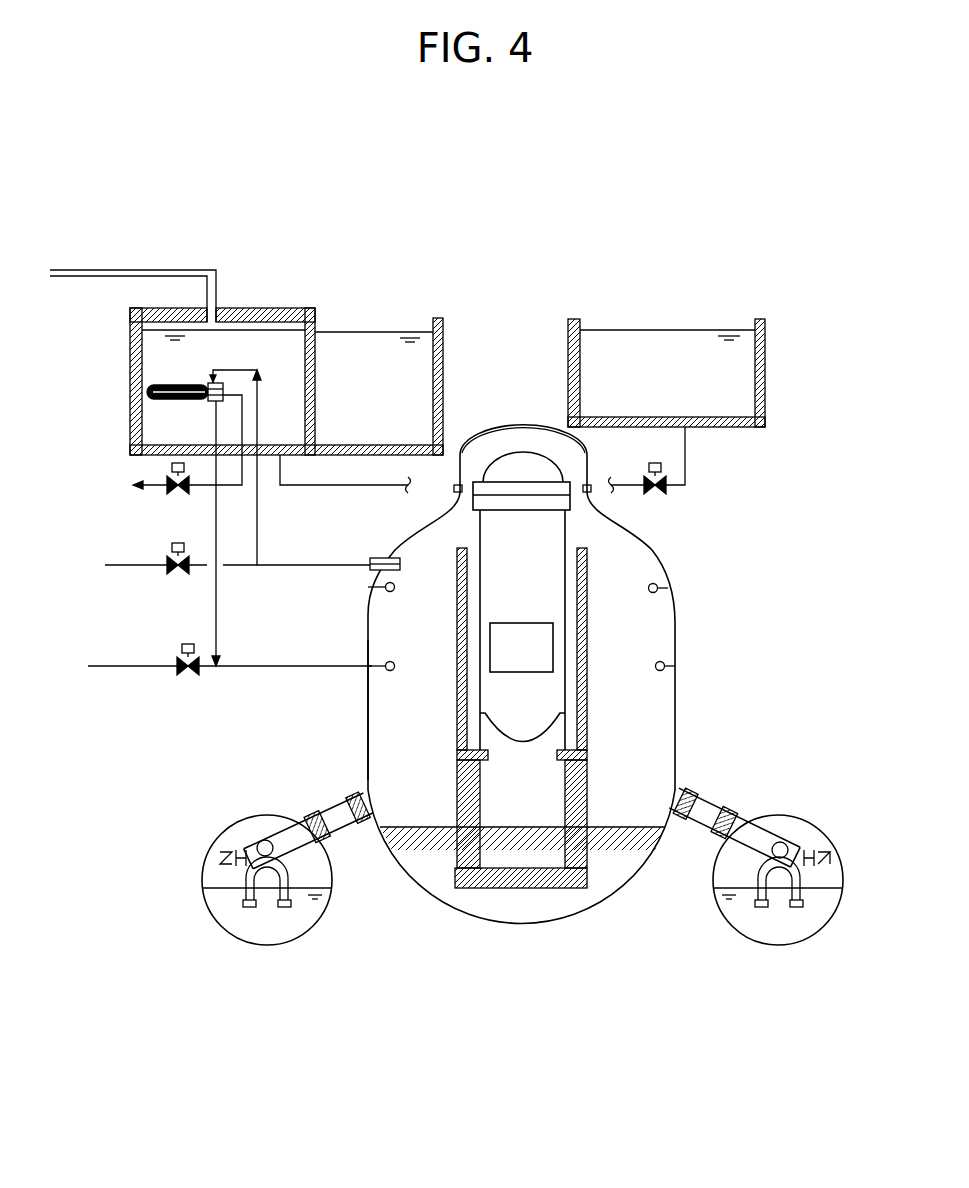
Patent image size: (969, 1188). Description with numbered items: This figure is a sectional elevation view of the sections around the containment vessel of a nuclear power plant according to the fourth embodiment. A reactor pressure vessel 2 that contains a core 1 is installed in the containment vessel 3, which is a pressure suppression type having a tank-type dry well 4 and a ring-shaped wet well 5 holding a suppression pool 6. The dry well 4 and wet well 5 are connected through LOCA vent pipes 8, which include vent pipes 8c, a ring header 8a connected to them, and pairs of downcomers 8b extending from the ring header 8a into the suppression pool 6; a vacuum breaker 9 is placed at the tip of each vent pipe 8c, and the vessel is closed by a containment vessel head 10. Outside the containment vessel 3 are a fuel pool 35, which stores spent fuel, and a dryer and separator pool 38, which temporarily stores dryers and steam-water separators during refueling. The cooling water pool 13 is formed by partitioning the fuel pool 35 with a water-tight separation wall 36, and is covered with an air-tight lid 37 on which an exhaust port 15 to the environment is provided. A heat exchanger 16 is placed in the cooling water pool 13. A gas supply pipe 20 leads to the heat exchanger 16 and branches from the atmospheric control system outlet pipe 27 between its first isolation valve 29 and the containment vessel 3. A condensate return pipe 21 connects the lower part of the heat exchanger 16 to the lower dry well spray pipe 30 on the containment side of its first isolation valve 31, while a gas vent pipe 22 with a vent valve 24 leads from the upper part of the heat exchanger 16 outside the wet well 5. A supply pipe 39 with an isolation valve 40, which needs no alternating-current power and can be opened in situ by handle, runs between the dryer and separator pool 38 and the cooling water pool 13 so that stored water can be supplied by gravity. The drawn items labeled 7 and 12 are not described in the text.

The core 1 is at (553, 647).
The reactor pressure vessel 2 is at (567, 535).
The containment vessel 3 is at (681, 598).
The dry well 4 is at (368, 735).
The wet well 5 is at (203, 838).
The suppression pool 6 is at (222, 903).
The vent pipe 7 is at (210, 877).
The LOCA vent pipes 8 is at (350, 856).
The ring header 8a is at (763, 843).
The downcomers 8b is at (288, 877).
The vent pipes 8c is at (757, 870).
The vacuum breaker 9 is at (820, 870).
The containment vessel head 10 is at (505, 425).
The water supply system 12 is at (282, 206).
The cooling water pool 13 is at (130, 412).
The exhaust port 15 is at (168, 270).
The heat exchanger 16 is at (206, 372).
The gas supply pipe 20 is at (256, 507).
The condensate return pipe 21 is at (218, 614).
The gas vent pipe 22 is at (162, 484).
The vent valve 24 is at (178, 496).
The atmospheric control system outlet pipe 27 is at (234, 567).
The first isolation valve 29 is at (175, 577).
The lower dry well spray pipe 30 is at (152, 664).
The first isolation valve 31 is at (186, 677).
The fuel pool 35 is at (446, 335).
The separation wall 36 is at (318, 385).
The lid 37 is at (283, 308).
The dryer and separator pool 38 is at (766, 328).
The supply pipe 39 is at (686, 457).
The isolation valve 40 is at (656, 496).